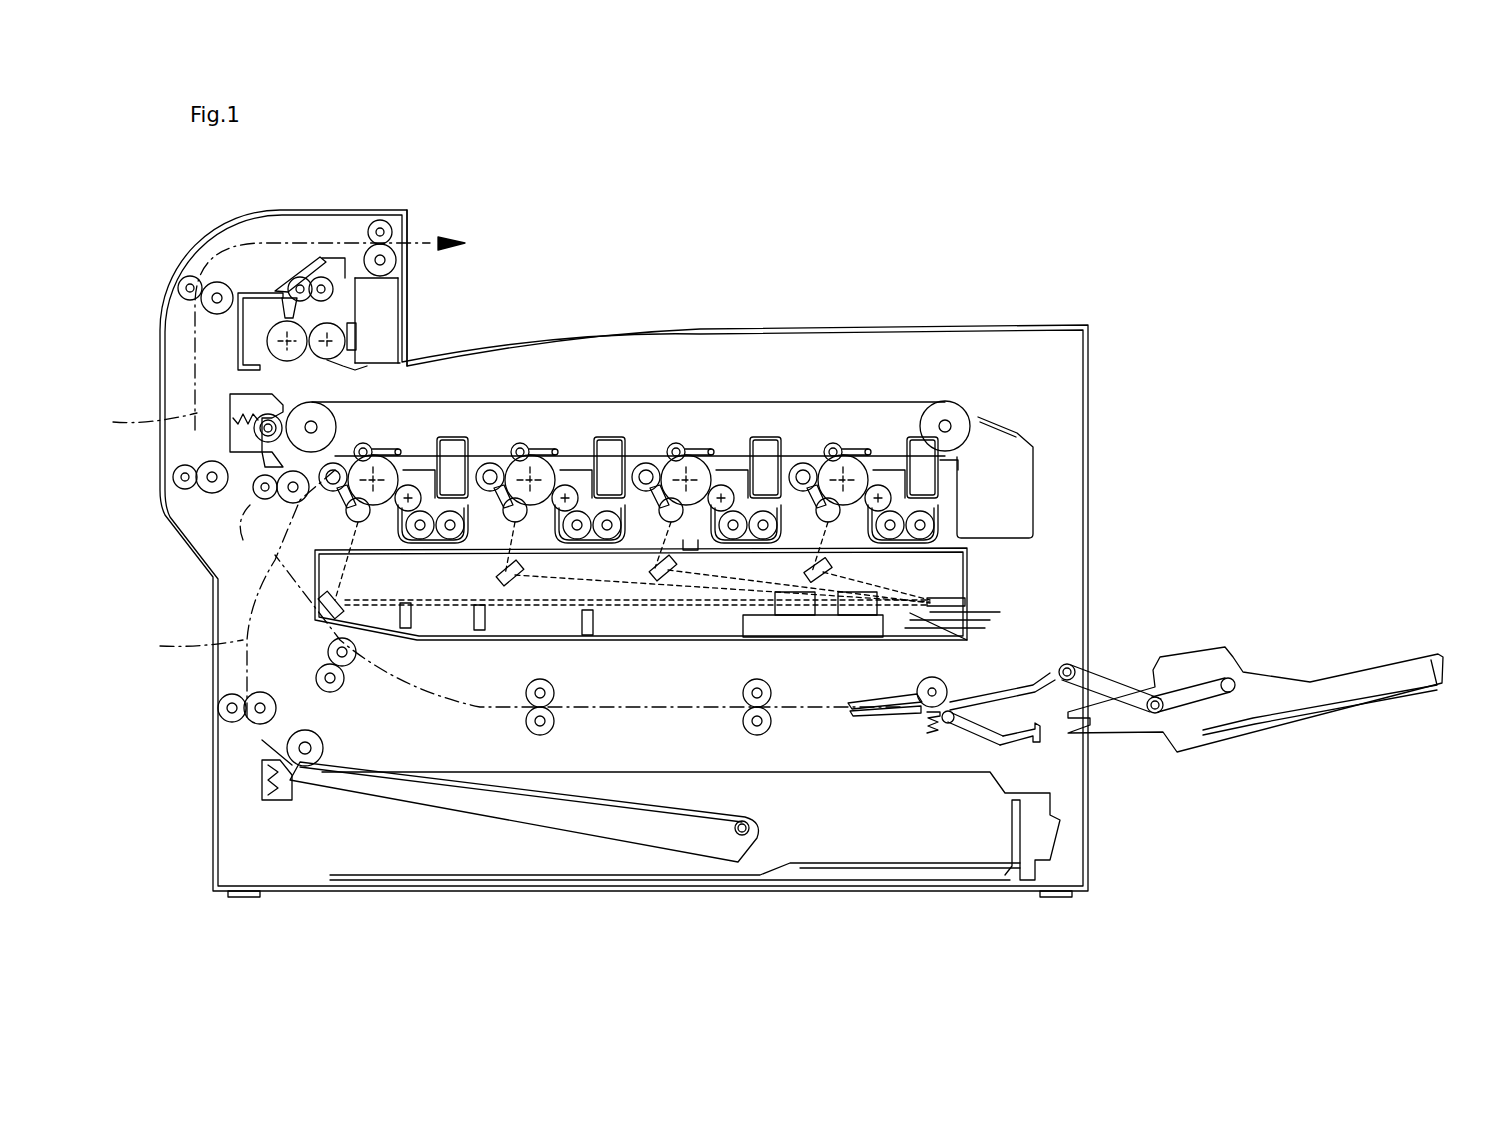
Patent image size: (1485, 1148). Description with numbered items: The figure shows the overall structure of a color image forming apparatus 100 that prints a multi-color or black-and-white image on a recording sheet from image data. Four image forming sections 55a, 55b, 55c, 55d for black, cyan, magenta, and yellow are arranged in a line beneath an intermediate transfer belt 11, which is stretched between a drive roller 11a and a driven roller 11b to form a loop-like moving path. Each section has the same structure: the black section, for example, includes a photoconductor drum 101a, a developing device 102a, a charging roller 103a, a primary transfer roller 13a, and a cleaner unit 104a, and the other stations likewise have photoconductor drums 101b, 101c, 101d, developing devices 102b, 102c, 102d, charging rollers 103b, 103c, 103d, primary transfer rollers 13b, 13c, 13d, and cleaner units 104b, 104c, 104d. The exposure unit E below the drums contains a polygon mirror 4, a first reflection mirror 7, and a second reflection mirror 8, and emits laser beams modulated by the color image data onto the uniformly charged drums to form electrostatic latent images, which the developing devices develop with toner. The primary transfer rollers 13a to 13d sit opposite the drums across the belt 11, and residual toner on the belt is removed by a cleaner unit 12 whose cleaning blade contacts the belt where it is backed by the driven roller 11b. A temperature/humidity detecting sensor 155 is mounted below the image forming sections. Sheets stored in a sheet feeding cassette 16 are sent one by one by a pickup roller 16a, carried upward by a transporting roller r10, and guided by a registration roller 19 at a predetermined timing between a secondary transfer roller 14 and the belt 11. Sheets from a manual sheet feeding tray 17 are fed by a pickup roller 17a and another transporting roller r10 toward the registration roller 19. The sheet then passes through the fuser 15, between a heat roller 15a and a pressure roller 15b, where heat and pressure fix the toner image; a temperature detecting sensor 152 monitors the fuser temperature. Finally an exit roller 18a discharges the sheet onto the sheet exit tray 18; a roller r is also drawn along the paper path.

The color image forming apparatus 100 is at (1152, 258).
The sheet exit tray 18 is at (548, 366).
The exit roller 18a is at (385, 222).
The fuser 15 is at (253, 307).
The heat roller 15a is at (340, 325).
The pressure roller 15b is at (280, 325).
The temperature detecting sensor 152 is at (360, 367).
The transporting roller r10 is at (185, 280).
The intermediate transfer belt 11 is at (930, 402).
The drive roller 11a is at (312, 412).
The driven roller 11b is at (962, 412).
The cleaner unit of the intermediate transfer belt 12 is at (1015, 440).
The photoconductor drum 101a is at (385, 455).
The photoconductor drum 101b is at (542, 455).
The photoconductor drum 101c is at (695, 455).
The photoconductor drum 101d is at (852, 455).
The primary transfer roller 13a is at (363, 443).
The primary transfer roller 13b is at (518, 443).
The primary transfer roller 13c is at (673, 443).
The primary transfer roller 13d is at (830, 443).
The developing device 102a is at (420, 470).
The developing device 102b is at (580, 470).
The developing device 102c is at (735, 470).
The developing device 102d is at (892, 470).
The charging roller 103a is at (360, 522).
The charging roller 103b is at (515, 522).
The charging roller 103c is at (671, 522).
The charging roller 103d is at (828, 522).
The cleaner unit 104a is at (325, 490).
The cleaner unit 104b is at (485, 465).
The cleaner unit 104c is at (643, 465).
The cleaner unit 104d is at (798, 465).
The image forming section 55a is at (440, 402).
The image forming section 55b is at (582, 402).
The image forming section 55c is at (745, 402).
The image forming section 55d is at (892, 402).
The secondary transfer roller 14 is at (230, 400).
The registration roller 19 is at (280, 497).
The exposure unit E is at (967, 575).
The second reflection mirror 8 is at (832, 572).
The temperature/humidity detecting sensor 155 is at (700, 550).
The polygon mirror 4 is at (965, 601).
The first reflection mirror 7 is at (593, 635).
The pickup roller 17a is at (944, 680).
The manual sheet feeding tray 17 is at (1287, 685).
The sheet feeding cassette 16 is at (843, 768).
The pickup roller 16a is at (324, 752).
The conveying roller r is at (225, 715).